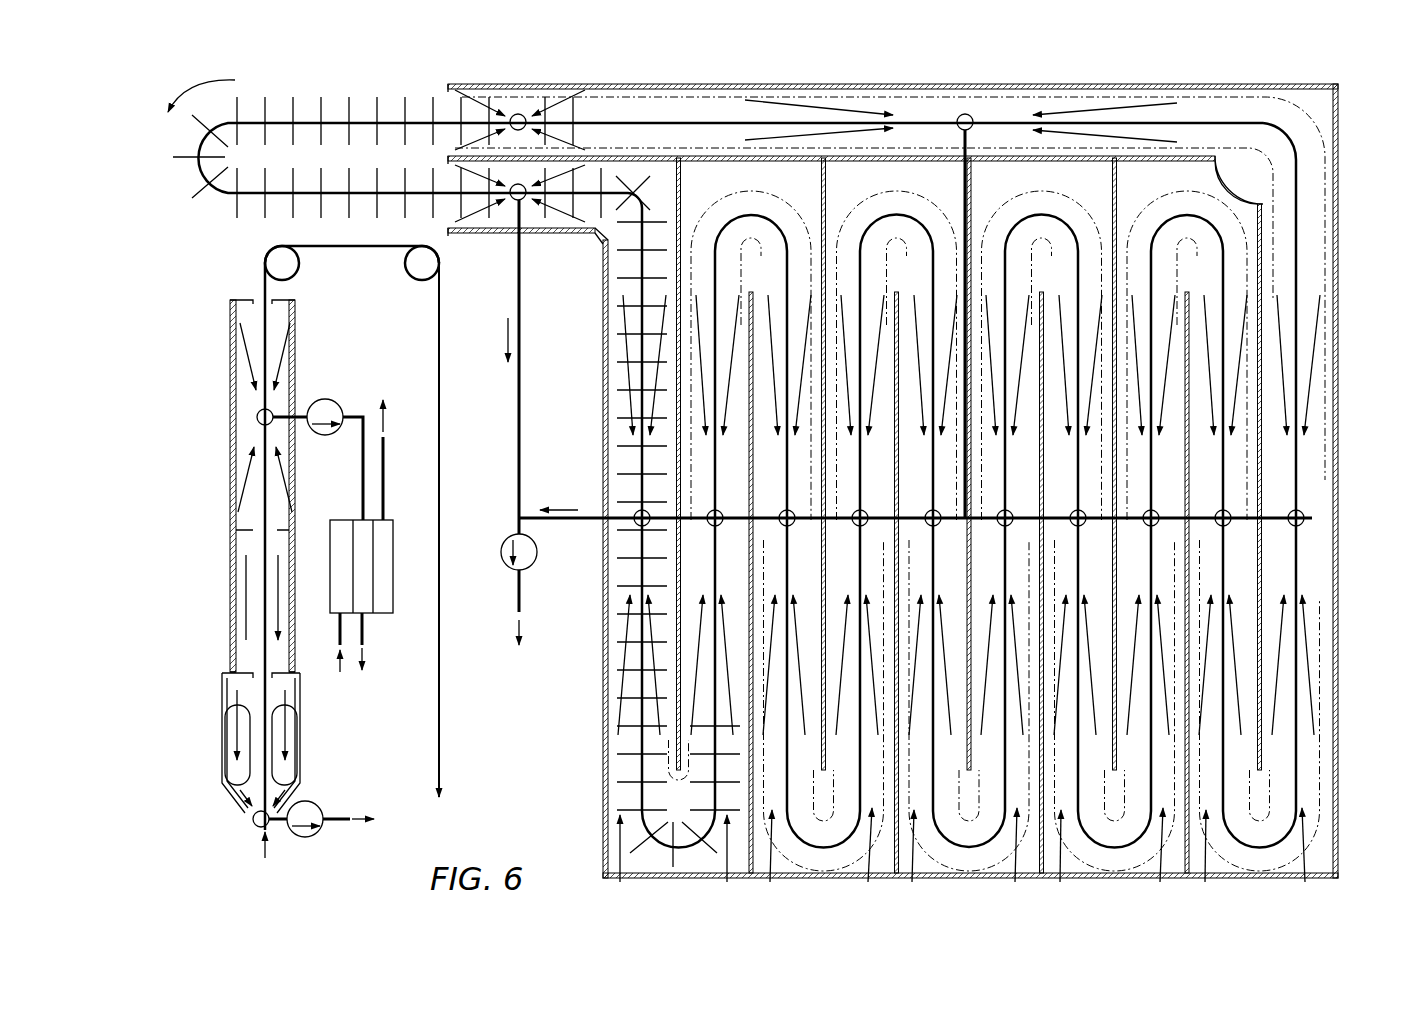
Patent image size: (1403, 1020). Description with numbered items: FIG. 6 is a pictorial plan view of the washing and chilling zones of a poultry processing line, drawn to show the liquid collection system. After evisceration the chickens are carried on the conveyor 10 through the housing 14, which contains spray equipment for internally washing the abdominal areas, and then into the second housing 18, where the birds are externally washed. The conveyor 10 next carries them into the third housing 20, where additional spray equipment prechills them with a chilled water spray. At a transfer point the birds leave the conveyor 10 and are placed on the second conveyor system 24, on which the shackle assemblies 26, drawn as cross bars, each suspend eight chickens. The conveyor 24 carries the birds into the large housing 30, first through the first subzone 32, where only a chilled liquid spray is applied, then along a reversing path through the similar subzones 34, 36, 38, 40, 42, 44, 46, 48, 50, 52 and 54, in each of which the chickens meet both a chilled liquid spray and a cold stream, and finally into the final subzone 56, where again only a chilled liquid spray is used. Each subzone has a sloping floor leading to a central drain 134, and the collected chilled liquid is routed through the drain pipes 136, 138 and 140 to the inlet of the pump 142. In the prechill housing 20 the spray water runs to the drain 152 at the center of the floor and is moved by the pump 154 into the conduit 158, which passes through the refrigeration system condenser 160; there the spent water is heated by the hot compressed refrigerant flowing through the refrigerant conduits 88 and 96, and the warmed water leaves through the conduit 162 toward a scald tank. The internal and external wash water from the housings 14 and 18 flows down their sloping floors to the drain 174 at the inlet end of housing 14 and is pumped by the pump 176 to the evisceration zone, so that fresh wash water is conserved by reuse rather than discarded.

The conveyor 10 is at (265, 545).
The housing 14 is at (222, 698).
The second housing 18 is at (230, 568).
The third housing 20 is at (230, 355).
The second conveyor system 24 is at (253, 198).
The shackle assemblies 26 is at (232, 210).
The large housing 30 is at (602, 370).
The first subzone 32 is at (530, 205).
The subzone 34 is at (621, 858).
The subzone 36 is at (727, 858).
The subzone 38 is at (767, 856).
The subzone 40 is at (866, 855).
The subzone 42 is at (910, 856).
The subzone 44 is at (1014, 855).
The subzone 46 is at (1061, 856).
The subzone 48 is at (1159, 855).
The subzone 50 is at (1204, 856).
The subzone 52 is at (1304, 855).
The subzone 54 is at (990, 112).
The final subzone 56 is at (532, 110).
The refrigerant conduit 88 is at (384, 470).
The conduit 96 is at (338, 632).
The drain 134 is at (508, 113).
The drain pipe 136 is at (962, 172).
The drain pipe 138 is at (527, 513).
The drain pipe 140 is at (523, 331).
The pump 142 is at (506, 540).
The drain 152 is at (257, 421).
The pump 154 is at (325, 399).
The conduit 158 is at (362, 488).
The refrigeration system condenser 160 is at (393, 538).
The conduit 162 is at (365, 632).
The drain 174 is at (252, 822).
The pump 176 is at (309, 836).